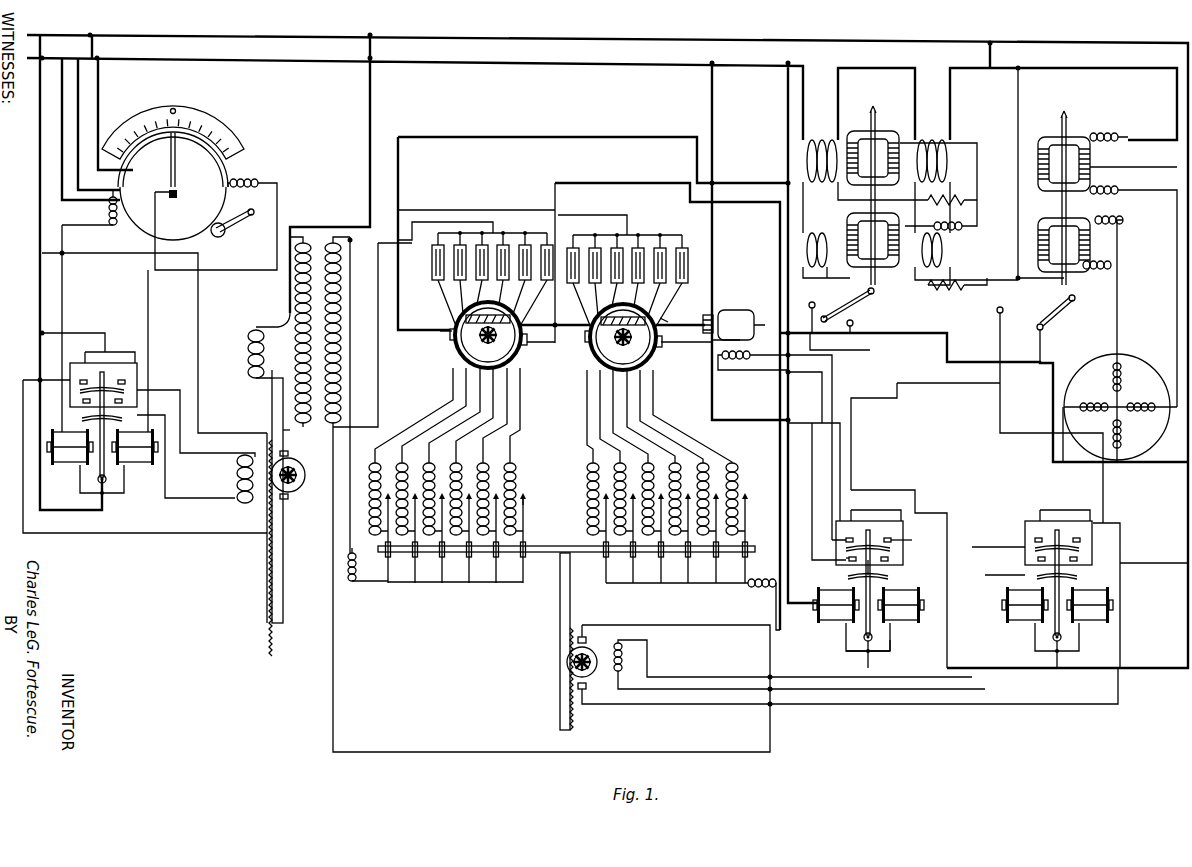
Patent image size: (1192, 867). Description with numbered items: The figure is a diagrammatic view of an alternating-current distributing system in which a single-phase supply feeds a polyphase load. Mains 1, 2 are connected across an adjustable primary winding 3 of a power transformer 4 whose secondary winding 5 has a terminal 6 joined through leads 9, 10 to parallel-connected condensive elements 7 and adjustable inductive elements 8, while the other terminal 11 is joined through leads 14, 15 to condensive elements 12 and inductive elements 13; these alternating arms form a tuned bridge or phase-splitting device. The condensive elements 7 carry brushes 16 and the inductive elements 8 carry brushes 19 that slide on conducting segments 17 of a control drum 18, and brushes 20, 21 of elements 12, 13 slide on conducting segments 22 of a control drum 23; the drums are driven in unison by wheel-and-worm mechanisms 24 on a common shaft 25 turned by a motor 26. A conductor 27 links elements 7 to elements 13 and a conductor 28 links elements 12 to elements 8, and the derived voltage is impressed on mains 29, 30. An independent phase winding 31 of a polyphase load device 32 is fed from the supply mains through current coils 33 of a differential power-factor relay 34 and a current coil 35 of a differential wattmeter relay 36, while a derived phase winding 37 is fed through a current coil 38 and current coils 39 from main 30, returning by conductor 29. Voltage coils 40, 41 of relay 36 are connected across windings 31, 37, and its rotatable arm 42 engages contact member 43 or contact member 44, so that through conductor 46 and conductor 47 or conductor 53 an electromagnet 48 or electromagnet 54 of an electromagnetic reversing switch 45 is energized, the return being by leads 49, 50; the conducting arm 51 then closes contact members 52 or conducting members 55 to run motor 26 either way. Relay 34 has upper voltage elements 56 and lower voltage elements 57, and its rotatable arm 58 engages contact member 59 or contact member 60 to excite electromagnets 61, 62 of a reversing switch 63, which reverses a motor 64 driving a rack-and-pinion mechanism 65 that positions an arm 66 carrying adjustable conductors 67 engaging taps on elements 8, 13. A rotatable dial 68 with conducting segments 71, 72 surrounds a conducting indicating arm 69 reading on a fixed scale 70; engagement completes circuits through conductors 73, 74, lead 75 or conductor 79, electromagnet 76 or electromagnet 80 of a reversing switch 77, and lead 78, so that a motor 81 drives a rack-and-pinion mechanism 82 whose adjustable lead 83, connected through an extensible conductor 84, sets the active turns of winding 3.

The main 1 is at (240, 35).
The main 2 is at (44, 60).
The adjustable primary winding 3 is at (295, 322).
The power transformer 4 is at (299, 440).
The secondary winding 5 is at (343, 330).
The terminal 6 is at (343, 248).
The condensive elements 7 is at (436, 252).
The adjustable inductive elements 8 is at (512, 470).
The lead 9 is at (416, 230).
The lead 10 is at (350, 403).
The terminal 11 is at (375, 430).
The condensive elements 12 is at (645, 237).
The adjustable inductive elements 13 is at (738, 470).
The lead 14 is at (604, 218).
The lead 15 is at (335, 675).
The brushes 16 is at (535, 285).
The conducting segments 17 is at (450, 345).
The control drum 18 is at (488, 335).
The brushes 19 is at (494, 378).
The brushes 20 is at (650, 285).
The brushes 21 is at (628, 378).
The conducting segments 22 is at (665, 345).
The control drum 23 is at (623, 337).
The wheel-and-worm mechanisms 24 is at (547, 339).
The common shaft 25 is at (665, 325).
The motor 26 is at (745, 329).
The conductor 27 is at (512, 140).
The conductor 28 is at (545, 345).
The main 29 is at (730, 205).
The main 30 is at (605, 183).
The independent phase winding 31 is at (1125, 385).
The polyphase load device 32 is at (1120, 408).
The current coils 33 is at (876, 176).
The differential power-factor relay 34 is at (899, 186).
The current coil 35 is at (1082, 135).
The differential wattmeter relay 36 is at (1109, 274).
The derived phase winding 37 is at (1125, 430).
The current coil 38 is at (1090, 242).
The current coils 39 is at (948, 243).
The voltage coil 40 is at (1090, 155).
The voltage coil 41 is at (1058, 222).
The rotatable arm 42 is at (1055, 305).
The contact member 43 is at (1042, 328).
The contact member 44 is at (995, 320).
The electromagnetic reversing switch 45 is at (857, 589).
The conductor 46 is at (1015, 217).
The conductor 47 is at (915, 490).
The electromagnet 48 is at (900, 618).
The lead 49 is at (892, 645).
The lead 50 is at (866, 665).
The conducting arm 51 is at (878, 565).
The contact members 52 is at (893, 540).
The conductor 53 is at (790, 508).
The electromagnet 54 is at (818, 608).
The conducting members 55 is at (846, 558).
The voltage elements 56 is at (878, 135).
The voltage elements 57 is at (860, 240).
The rotatable arm 58 is at (852, 293).
The contact member 59 is at (853, 324).
The contact member 60 is at (832, 326).
The electromagnet 61 is at (1082, 618).
The electromagnet 62 is at (1030, 618).
The reversing switch 63 is at (1080, 583).
The motor 64 is at (842, 666).
The rack-and-pinion mechanism 65 is at (568, 660).
The arm 66 is at (545, 546).
The adjustable conductors 67 is at (530, 500).
The rotatable dial 68 is at (137, 230).
The conducting indicating arm 69 is at (182, 158).
The scale 70 is at (238, 130).
The conducting segment 71 is at (130, 157).
The conducting segment 72 is at (218, 172).
The conductor 73 is at (88, 253).
The conductor 74 is at (156, 218).
The lead 75 is at (63, 300).
The electromagnet 76 is at (64, 465).
The reversing switch 77 is at (148, 413).
The lead 78 is at (38, 360).
The conductor 79 is at (213, 272).
The electromagnet 80 is at (135, 465).
The motor 81 is at (298, 488).
The rack-and-pinion mechanism 82 is at (283, 420).
The adjustable lead 83 is at (285, 378).
The extensible conductor 84 is at (248, 335).